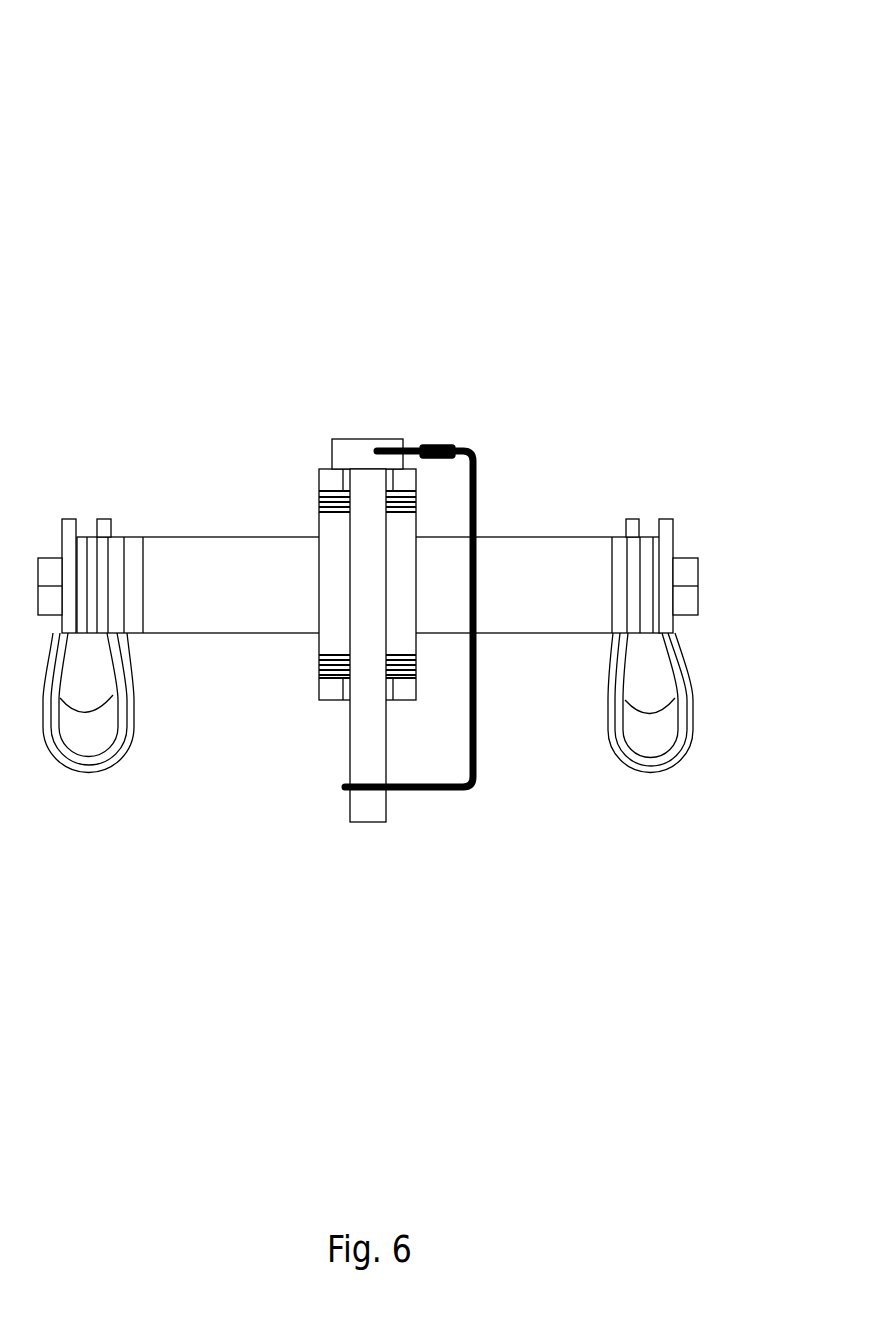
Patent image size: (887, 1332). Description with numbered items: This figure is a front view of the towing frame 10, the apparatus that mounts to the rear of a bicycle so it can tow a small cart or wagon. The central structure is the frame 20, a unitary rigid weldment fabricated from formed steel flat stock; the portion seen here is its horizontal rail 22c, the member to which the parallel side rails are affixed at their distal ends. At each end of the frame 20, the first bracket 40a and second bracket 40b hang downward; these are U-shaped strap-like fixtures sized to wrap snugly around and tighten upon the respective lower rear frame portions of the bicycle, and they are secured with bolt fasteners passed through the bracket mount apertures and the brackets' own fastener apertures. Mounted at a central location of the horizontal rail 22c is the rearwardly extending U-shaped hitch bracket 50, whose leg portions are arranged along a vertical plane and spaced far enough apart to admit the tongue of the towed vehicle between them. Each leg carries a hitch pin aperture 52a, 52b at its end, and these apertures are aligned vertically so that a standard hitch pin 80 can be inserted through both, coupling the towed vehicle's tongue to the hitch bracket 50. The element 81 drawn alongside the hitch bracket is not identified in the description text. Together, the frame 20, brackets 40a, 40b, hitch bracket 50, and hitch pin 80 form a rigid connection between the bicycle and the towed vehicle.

The towing frame 10 is at (111, 173).
The frame 20 is at (183, 539).
The horizontal rail 22c is at (247, 578).
The first bracket 40a is at (110, 748).
The second bracket 40b is at (672, 772).
The hitch bracket 50 is at (400, 540).
The first hitch pin aperture 52a is at (343, 487).
The second hitch pin aperture 52b is at (340, 687).
The hitch pin 80 is at (362, 600).
The cable 81 is at (477, 748).